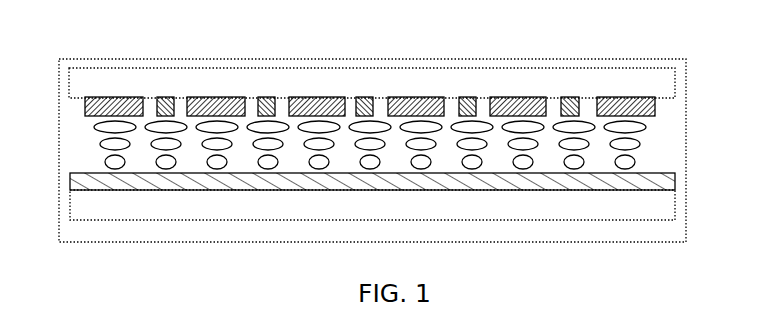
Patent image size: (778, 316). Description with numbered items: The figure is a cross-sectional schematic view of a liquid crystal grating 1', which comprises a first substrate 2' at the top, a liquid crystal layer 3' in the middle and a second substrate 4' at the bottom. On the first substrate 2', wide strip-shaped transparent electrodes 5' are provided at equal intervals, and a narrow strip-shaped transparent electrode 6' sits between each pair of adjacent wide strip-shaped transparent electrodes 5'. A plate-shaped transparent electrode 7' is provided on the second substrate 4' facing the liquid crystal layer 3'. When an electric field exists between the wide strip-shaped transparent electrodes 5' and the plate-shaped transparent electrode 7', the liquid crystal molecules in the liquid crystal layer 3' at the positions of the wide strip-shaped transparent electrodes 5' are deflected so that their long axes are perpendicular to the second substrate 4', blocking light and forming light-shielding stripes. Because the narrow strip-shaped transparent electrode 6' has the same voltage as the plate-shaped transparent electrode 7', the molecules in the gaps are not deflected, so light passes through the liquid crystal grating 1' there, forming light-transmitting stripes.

The liquid crystal grating 1' is at (358, 150).
The first substrate 2' is at (399, 76).
The liquid crystal layer 3' is at (411, 134).
The second substrate 4' is at (403, 191).
The wide strip-shaped transparent electrodes 5' is at (361, 65).
The narrow strip-shaped transparent electrode 6' is at (357, 65).
The plate-shaped transparent electrode 7' is at (352, 167).